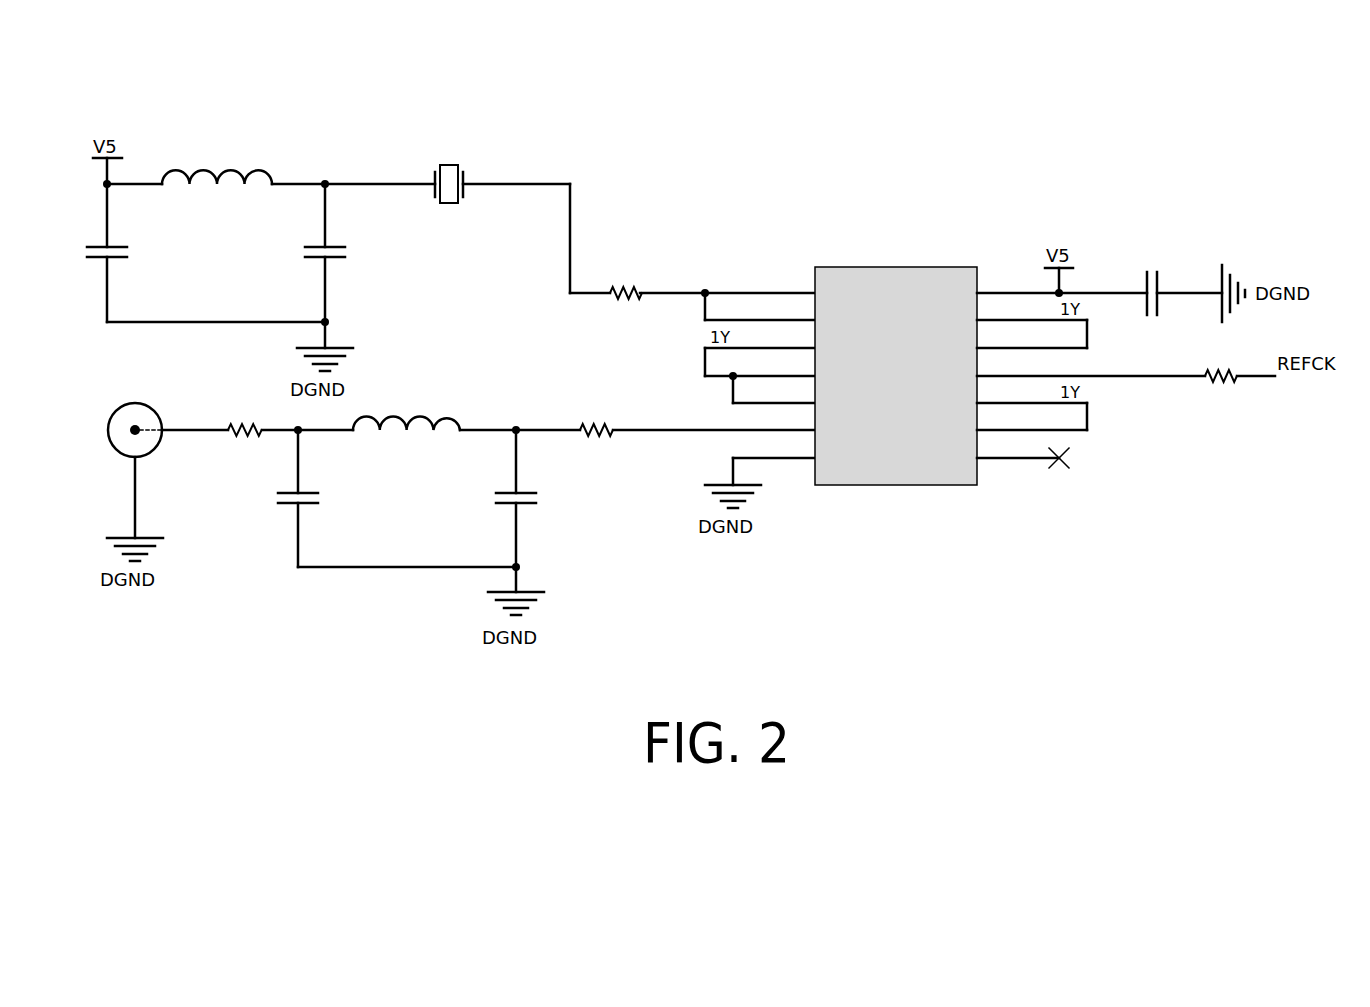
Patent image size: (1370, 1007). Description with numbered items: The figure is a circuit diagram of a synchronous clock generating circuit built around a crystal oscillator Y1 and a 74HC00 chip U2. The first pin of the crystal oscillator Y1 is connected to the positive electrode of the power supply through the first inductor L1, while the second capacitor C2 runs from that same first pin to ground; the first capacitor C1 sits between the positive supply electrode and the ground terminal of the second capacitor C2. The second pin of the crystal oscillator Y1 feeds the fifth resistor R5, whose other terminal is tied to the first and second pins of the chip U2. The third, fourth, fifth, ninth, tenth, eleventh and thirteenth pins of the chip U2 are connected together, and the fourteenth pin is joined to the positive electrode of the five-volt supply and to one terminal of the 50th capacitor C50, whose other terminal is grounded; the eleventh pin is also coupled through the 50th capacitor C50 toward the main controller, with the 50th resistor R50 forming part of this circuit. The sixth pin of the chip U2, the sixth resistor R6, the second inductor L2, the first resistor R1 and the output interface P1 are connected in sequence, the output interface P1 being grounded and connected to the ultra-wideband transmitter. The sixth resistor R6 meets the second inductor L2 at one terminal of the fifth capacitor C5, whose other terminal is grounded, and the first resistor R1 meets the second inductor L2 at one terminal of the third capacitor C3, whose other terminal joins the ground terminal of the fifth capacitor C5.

The first inductor L1 is at (217, 165).
The first capacitor C1 is at (122, 253).
The second capacitor C2 is at (340, 253).
The crystal oscillator Y1 is at (449, 187).
The fifth resistor R5 is at (619, 281).
The 74HC00 chip U2 is at (905, 378).
The 50th capacitor C50 is at (1154, 280).
The 50th resistor R50 is at (1214, 365).
The output interface P1 is at (121, 430).
The first resistor R1 is at (237, 418).
The second inductor L2 is at (410, 411).
The sixth resistor R6 is at (590, 418).
The third capacitor C3 is at (312, 498).
The fifth capacitor C5 is at (530, 498).